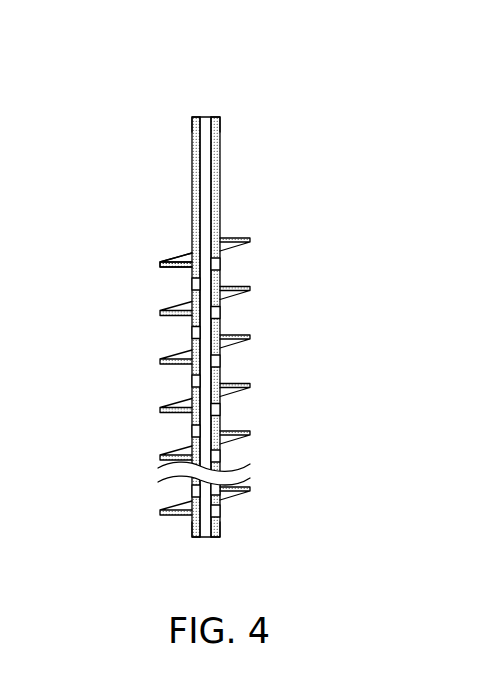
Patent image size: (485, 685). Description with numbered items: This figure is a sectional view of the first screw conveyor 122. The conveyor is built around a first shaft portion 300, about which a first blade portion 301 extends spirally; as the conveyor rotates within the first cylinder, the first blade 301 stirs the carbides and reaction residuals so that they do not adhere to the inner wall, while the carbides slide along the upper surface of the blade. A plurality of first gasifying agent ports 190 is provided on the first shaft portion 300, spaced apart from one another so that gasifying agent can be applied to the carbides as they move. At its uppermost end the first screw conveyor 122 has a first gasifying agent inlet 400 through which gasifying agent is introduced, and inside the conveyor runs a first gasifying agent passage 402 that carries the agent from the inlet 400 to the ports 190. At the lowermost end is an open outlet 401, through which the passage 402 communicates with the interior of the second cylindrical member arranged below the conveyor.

The first screw conveyor 122 is at (209, 311).
The first gasifying agent inlet 400 is at (205, 117).
The open outlet 401 is at (205, 537).
The first gasifying agent passage 402 is at (207, 198).
The first gasifying agent ports 190 is at (220, 260).
The first shaft portion 300 is at (190, 366).
The first blade portion 301 is at (159, 265).